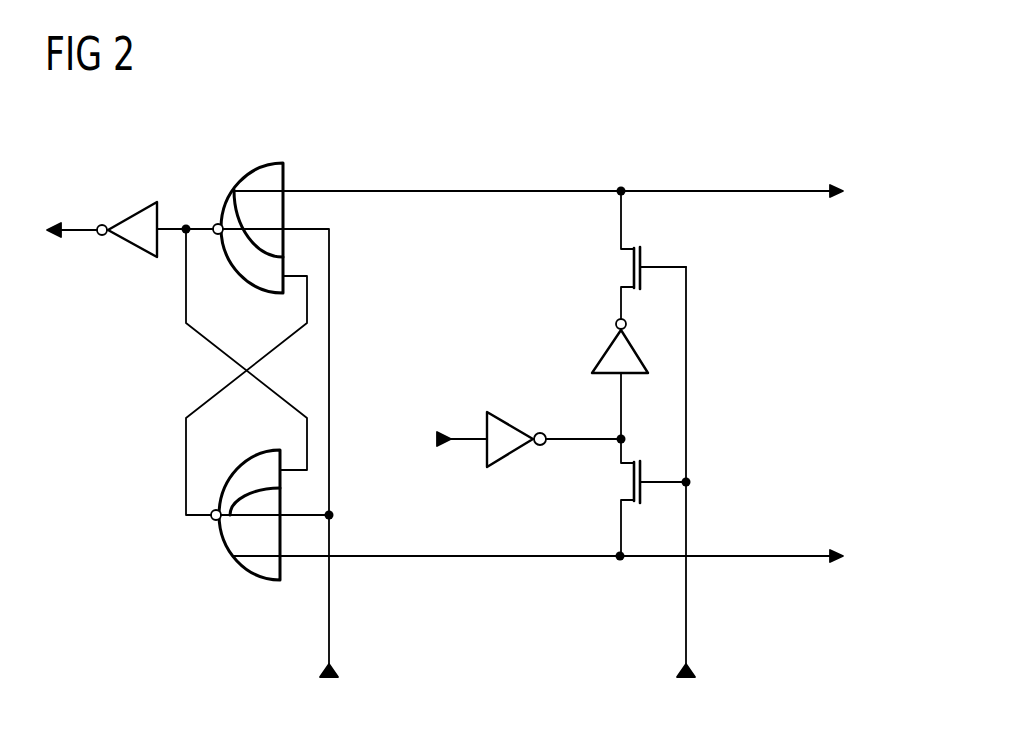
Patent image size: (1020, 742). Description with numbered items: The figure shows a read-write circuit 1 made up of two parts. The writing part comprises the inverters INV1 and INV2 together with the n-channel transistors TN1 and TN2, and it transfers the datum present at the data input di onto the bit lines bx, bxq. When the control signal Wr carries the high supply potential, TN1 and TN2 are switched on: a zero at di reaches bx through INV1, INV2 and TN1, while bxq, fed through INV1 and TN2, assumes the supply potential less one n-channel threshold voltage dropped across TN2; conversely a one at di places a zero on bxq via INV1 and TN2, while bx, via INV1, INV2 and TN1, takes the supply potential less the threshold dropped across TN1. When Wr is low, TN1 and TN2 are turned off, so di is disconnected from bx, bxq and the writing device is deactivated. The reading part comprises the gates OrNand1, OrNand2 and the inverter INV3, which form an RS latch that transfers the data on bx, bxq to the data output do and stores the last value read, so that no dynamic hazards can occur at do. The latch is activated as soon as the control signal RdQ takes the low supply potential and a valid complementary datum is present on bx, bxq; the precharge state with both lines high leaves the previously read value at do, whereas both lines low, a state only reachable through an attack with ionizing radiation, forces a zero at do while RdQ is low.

The latch circuit 1 is at (156, 559).
The OrNand1 gate OrNand1 is at (260, 166).
The OrNand2 gate OrNand2 is at (247, 573).
The inverter INV1 is at (538, 404).
The inverter INV2 is at (604, 350).
The inverter INV3 is at (130, 248).
The n-channel transistor TN1 is at (634, 259).
The n-channel transistor TN2 is at (633, 474).
The data output do is at (68, 214).
The data input di is at (457, 423).
The bit line bx is at (556, 194).
The bit line bxq is at (564, 559).
The control signal RdQ is at (326, 691).
The control signal Wr is at (685, 492).